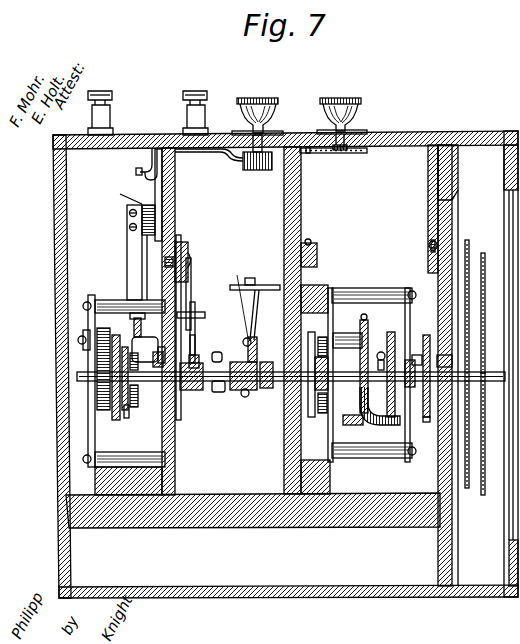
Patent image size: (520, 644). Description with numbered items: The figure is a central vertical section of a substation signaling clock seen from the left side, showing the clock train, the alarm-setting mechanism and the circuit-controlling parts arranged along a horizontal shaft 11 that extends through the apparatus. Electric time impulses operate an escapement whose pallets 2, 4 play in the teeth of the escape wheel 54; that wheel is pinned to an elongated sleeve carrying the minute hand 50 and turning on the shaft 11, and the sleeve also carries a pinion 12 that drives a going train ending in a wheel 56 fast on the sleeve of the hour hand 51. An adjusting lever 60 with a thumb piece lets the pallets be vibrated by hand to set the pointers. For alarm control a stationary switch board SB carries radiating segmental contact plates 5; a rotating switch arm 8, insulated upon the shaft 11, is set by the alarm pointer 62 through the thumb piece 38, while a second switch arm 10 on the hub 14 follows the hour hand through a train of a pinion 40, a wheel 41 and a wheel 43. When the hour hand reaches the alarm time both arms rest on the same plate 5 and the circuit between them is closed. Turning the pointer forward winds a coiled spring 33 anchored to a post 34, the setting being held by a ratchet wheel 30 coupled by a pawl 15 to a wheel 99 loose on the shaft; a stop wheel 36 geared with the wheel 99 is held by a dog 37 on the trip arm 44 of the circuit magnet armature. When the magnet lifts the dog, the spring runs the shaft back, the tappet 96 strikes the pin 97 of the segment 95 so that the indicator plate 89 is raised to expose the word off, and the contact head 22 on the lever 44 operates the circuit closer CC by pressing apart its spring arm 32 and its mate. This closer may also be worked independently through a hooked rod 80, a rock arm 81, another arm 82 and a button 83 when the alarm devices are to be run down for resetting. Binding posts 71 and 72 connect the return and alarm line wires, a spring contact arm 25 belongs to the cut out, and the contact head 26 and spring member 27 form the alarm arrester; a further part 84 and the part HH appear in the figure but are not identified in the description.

The pallet 2 is at (363, 322).
The pallet 4 is at (386, 425).
The segmental metal contact plate 5 is at (284, 273).
The rotating switch arm 8 is at (259, 318).
The switch arm 10 is at (256, 362).
The horizontal shaft 11 is at (206, 386).
The pinion 12 is at (425, 345).
The hub 14 is at (265, 384).
The pawl 15 is at (125, 347).
The contact head 22 is at (122, 304).
The spring contact arm 25 is at (318, 250).
The contact head 26 is at (308, 148).
The spring member 27 is at (330, 153).
The ratchet wheel 30 is at (128, 412).
The spring arm 32 is at (127, 264).
The coiled spring 33 is at (105, 411).
The post 34 is at (85, 331).
The stop wheel 36 is at (135, 404).
The dog 37 is at (147, 340).
The thumb piece 38 is at (498, 381).
The pinion 40 is at (329, 364).
The wheel 41 is at (322, 414).
The wheel 43 is at (314, 367).
The trip arm or lever 44 is at (181, 327).
The minute hand 50 is at (468, 252).
The hour hand 51 is at (482, 432).
The escape wheel 54 is at (394, 328).
The wheel 56 is at (427, 421).
The adjusting lever 60 is at (352, 427).
The alarm pointer 62 is at (485, 328).
The binding post 71 is at (111, 115).
The binding post 72 is at (187, 111).
The hooked rod 80 is at (156, 193).
The rock arm 81 is at (150, 157).
The arm 82 is at (243, 166).
The button 83 is at (266, 99).
The bell knob 84 is at (343, 98).
The indicator plate 89 is at (436, 182).
The segment 95 is at (189, 298).
The tappet 96 is at (195, 344).
The pin 97 is at (199, 316).
The wheel 99 is at (116, 336).
The circuit closer CC is at (126, 210).
The switch board SB is at (255, 270).
The perforated plate HH is at (346, 161).